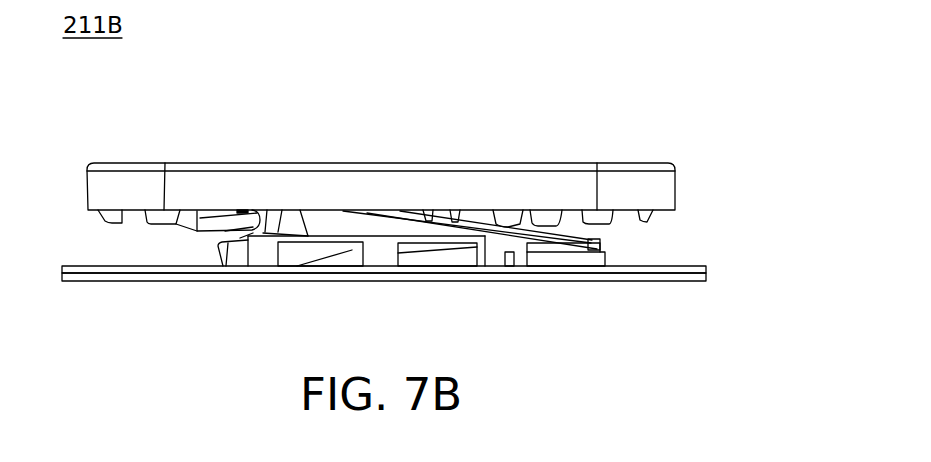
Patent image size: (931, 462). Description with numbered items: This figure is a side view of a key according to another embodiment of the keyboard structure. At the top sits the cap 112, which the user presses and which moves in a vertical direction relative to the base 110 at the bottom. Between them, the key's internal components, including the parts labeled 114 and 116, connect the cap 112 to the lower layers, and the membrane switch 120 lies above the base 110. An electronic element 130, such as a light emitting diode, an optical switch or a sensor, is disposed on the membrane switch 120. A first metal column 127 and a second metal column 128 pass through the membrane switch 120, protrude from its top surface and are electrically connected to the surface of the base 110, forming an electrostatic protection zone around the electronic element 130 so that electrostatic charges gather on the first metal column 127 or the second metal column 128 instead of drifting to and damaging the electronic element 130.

The cap 112 is at (512, 163).
The slider stem 114 is at (320, 220).
The scissor link 116 is at (522, 220).
The membrane switch 120 is at (670, 267).
The base 110 is at (672, 282).
The first metal column 127 is at (583, 258).
The second metal column 128 is at (509, 262).
The electronic element 130 is at (603, 248).